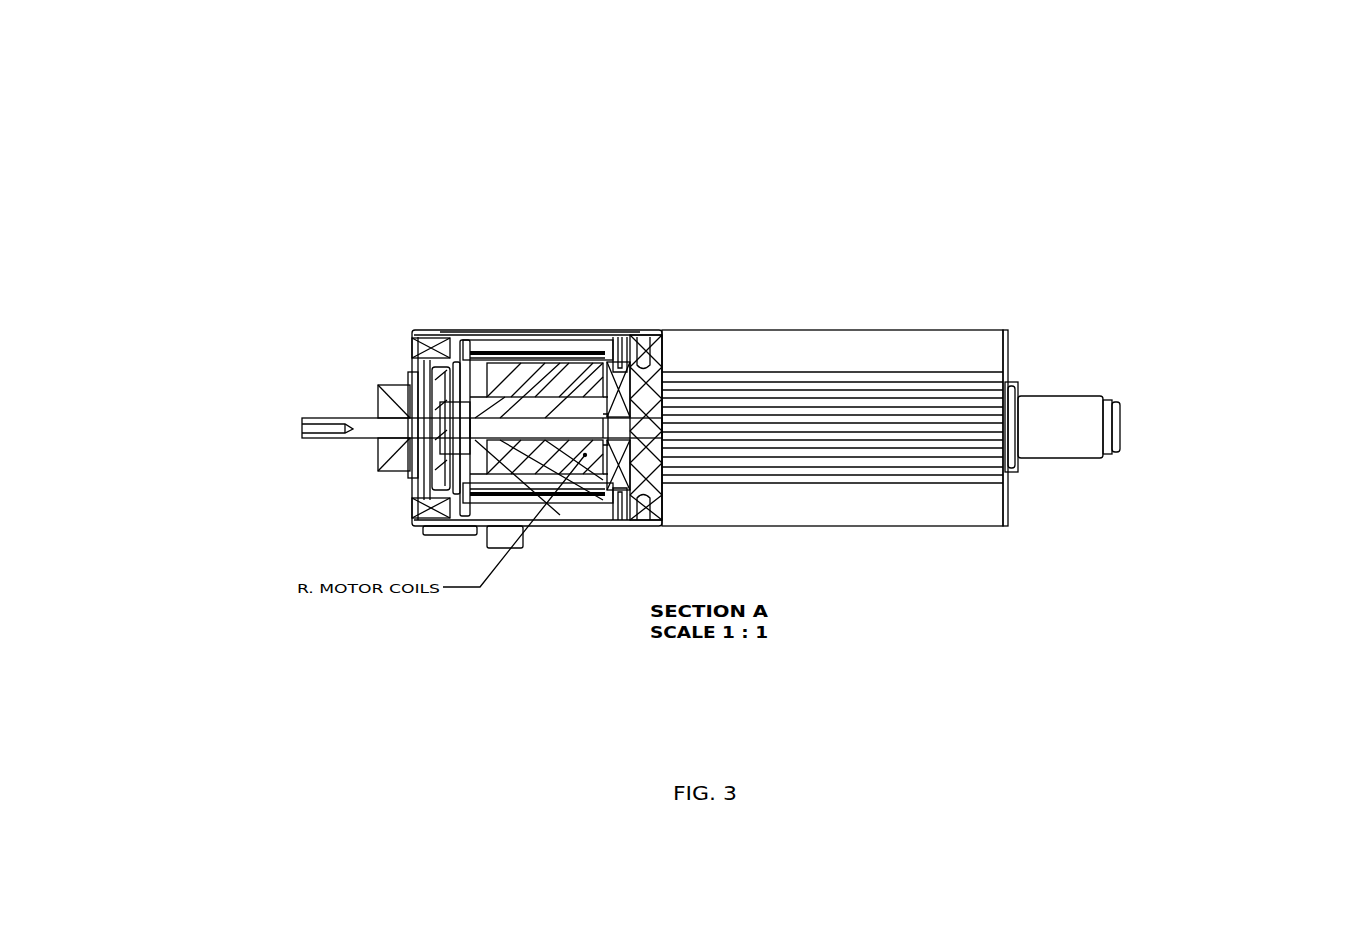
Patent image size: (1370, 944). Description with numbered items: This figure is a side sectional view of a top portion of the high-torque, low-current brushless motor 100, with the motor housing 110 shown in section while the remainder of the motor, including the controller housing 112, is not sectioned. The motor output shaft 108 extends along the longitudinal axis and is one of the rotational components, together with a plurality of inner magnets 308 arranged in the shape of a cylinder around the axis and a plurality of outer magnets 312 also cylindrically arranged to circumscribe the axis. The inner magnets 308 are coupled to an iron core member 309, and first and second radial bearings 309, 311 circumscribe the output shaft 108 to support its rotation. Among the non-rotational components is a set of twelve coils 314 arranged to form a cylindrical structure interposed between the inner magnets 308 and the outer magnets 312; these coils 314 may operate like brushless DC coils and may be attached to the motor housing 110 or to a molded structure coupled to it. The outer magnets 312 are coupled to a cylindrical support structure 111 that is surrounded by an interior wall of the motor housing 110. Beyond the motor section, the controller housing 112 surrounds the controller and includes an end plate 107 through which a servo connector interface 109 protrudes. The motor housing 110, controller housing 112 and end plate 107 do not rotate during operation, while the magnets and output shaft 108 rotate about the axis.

The brushless motor 100 is at (881, 114).
The end plate 107 is at (1006, 483).
The motor output shaft 108 is at (356, 432).
The servo connector interface 109 is at (1058, 412).
The motor housing 110 is at (543, 331).
The cylindrical support structure 111 is at (540, 336).
The controller housing 112 is at (855, 352).
The inner magnets 308 is at (513, 375).
The iron core member 309 is at (395, 449).
The second radial bearing 311 is at (628, 498).
The outer magnets 312 is at (550, 346).
The coils 314 is at (425, 455).